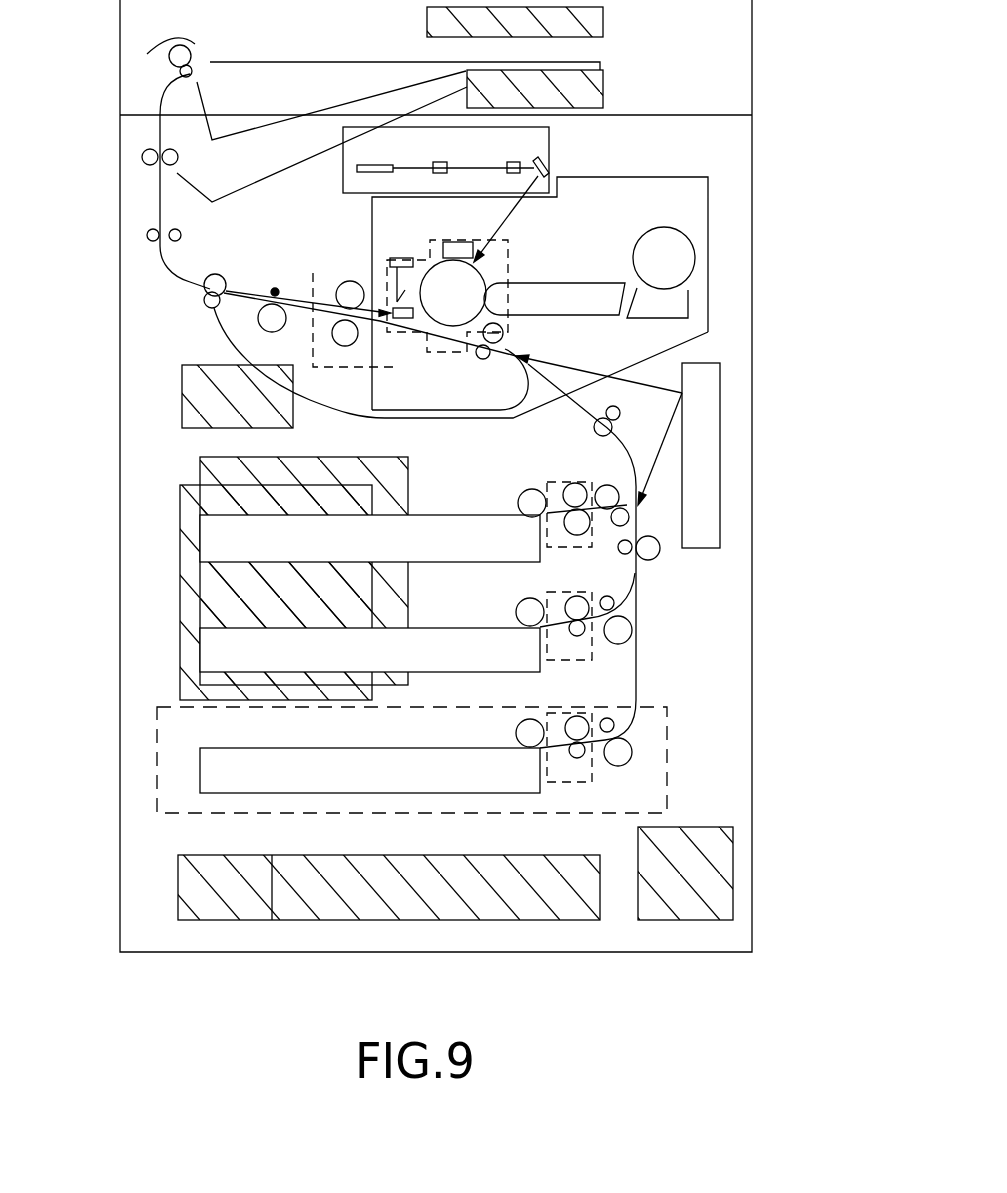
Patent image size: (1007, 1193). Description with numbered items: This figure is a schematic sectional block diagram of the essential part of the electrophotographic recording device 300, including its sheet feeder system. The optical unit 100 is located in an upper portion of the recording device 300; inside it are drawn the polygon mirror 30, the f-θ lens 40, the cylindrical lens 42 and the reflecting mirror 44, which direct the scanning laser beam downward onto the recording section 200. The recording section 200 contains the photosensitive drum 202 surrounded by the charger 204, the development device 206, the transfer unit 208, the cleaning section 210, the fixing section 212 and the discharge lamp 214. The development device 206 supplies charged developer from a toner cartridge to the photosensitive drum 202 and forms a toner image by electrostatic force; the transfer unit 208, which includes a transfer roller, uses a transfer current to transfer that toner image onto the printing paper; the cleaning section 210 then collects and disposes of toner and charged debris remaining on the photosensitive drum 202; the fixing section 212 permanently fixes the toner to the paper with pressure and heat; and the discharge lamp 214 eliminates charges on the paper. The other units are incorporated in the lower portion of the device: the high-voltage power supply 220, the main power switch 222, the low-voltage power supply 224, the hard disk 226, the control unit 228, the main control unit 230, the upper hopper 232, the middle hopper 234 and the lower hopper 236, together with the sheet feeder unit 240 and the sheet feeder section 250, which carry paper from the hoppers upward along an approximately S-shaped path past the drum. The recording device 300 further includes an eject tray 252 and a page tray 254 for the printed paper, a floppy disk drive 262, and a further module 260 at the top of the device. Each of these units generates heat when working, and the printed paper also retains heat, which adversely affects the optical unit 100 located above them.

The polygon mirror 30 is at (357, 168).
The f-θ lens 40 is at (433, 163).
The cylindrical lens 42 is at (510, 163).
The reflecting mirror 44 is at (550, 158).
The optical unit 100 is at (537, 141).
The recording section 200 is at (660, 238).
The photosensitive drum 202 is at (461, 309).
The charger 204 is at (452, 240).
The development device 206 is at (772, 228).
The transfer unit 208 is at (436, 356).
The cleaning section 210 is at (388, 260).
The fixing section 212 is at (353, 307).
The discharge lamp 214 is at (298, 302).
The high-voltage power supply 220 is at (198, 404).
The main power switch 222 is at (723, 868).
The low-voltage power supply 224 is at (517, 900).
The hard disk 226 is at (187, 898).
The control unit 228 is at (322, 456).
The main control unit 230 is at (225, 497).
The upper hopper 232 is at (370, 538).
The middle hopper 234 is at (370, 650).
The lower hopper 236 is at (412, 760).
The sheet feeder unit 240 is at (545, 585).
The sheet feeder section 250 is at (720, 440).
The eject tray 252 is at (373, 69).
The page tray 254 is at (322, 136).
The upper module 260 is at (602, 20).
The floppy disk drive 262 is at (603, 80).
The electrophotographic recording device 300 is at (779, 298).